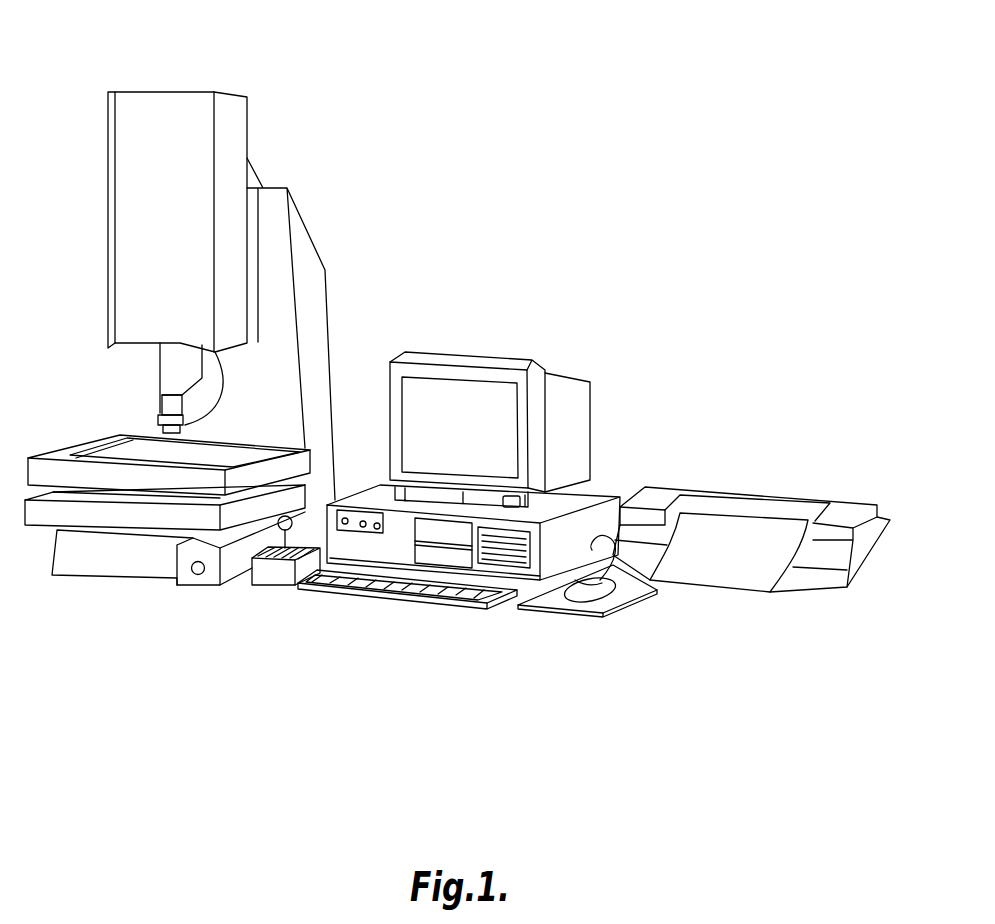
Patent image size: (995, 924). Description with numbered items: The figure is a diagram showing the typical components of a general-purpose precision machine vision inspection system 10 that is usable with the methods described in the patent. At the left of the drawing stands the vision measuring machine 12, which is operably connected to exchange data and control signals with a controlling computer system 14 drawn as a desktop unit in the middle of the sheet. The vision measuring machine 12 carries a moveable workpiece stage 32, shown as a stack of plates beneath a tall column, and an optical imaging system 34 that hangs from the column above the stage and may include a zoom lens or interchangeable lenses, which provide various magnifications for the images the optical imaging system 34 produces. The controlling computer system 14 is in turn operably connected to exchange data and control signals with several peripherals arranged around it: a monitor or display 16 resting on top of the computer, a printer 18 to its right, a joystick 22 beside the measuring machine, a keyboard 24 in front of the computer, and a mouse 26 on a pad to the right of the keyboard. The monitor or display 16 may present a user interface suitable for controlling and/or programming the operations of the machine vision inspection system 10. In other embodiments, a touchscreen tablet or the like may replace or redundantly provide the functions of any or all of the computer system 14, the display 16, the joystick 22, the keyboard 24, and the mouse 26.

The machine vision inspection system 10 is at (597, 154).
The vision measuring machine 12 is at (165, 92).
The controlling computer system 14 is at (604, 488).
The monitor or display 16 is at (473, 358).
The printer 18 is at (762, 495).
The joystick 22 is at (268, 585).
The keyboard 24 is at (390, 597).
The mouse 26 is at (593, 593).
The moveable workpiece stage 32 is at (80, 446).
The optical imaging system 34 is at (158, 345).